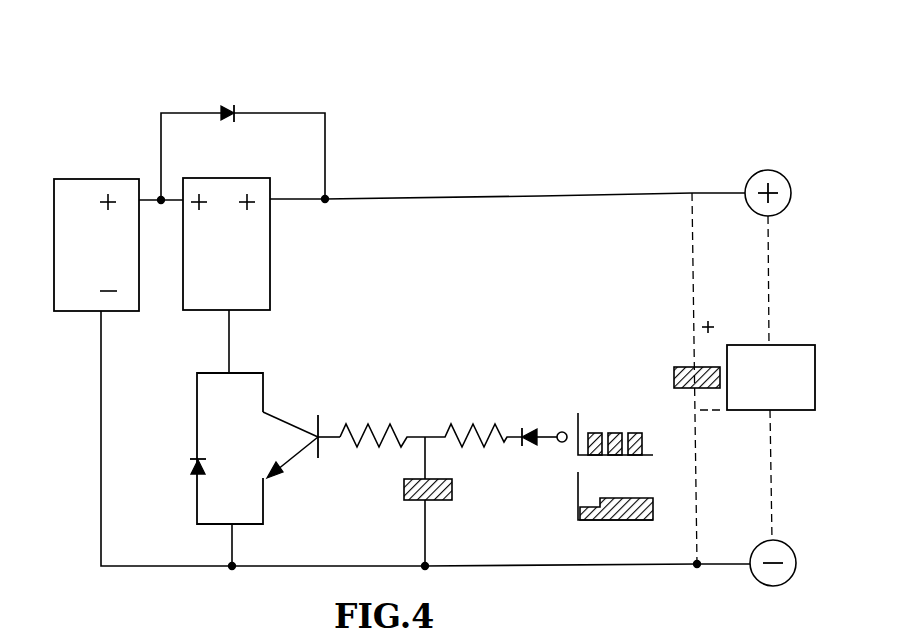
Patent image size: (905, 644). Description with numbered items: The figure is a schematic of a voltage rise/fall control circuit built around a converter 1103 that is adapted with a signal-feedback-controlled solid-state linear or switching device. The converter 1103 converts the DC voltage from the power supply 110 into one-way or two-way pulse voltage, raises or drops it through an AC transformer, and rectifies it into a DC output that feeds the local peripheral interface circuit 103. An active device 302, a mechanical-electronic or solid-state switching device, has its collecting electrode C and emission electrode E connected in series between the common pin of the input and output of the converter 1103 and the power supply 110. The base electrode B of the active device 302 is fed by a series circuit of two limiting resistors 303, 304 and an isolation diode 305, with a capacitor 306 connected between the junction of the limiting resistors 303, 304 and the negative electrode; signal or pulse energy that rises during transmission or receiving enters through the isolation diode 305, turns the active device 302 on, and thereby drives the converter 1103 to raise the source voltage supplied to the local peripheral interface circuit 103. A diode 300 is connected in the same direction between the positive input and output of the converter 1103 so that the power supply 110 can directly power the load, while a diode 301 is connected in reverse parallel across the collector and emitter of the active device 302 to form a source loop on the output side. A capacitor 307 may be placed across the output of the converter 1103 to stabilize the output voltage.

The power supply 110 is at (87, 178).
The converter 1103 is at (183, 258).
The diode 300 is at (236, 104).
The diode 301 is at (188, 457).
The active device 302 is at (295, 457).
The limiting resistor 303 is at (383, 432).
The limiting resistor 304 is at (467, 433).
The isolation diode 305 is at (535, 427).
The capacitor 306 is at (448, 507).
The capacitor 307 is at (672, 385).
The local peripheral interface circuit 103 is at (759, 410).